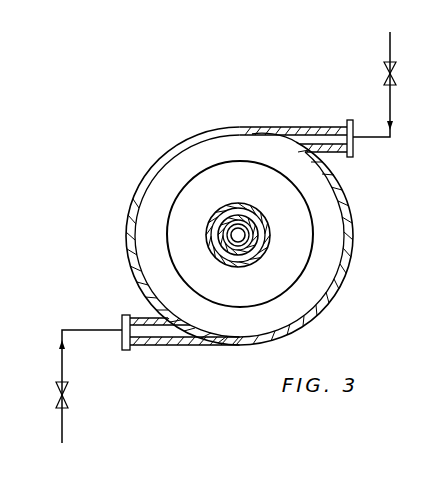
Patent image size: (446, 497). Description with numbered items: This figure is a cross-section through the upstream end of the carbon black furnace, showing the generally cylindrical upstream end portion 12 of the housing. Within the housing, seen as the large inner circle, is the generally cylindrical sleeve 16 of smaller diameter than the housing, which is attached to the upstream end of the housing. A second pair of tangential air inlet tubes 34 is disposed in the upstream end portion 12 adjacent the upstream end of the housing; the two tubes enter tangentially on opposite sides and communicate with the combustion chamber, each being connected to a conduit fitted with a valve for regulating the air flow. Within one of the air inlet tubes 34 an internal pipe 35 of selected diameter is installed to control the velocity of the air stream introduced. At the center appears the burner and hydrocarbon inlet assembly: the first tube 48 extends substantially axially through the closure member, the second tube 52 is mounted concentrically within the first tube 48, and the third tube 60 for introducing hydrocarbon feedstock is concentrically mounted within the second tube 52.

The upstream end portion 12 is at (353, 257).
The sleeve 16 is at (194, 178).
The second pair of tangential air inlet tubes 34 is at (305, 127).
The internal pipe 35 is at (320, 142).
The first tube 48 is at (210, 227).
The second tube 52 is at (257, 248).
The third tube 60 is at (242, 232).